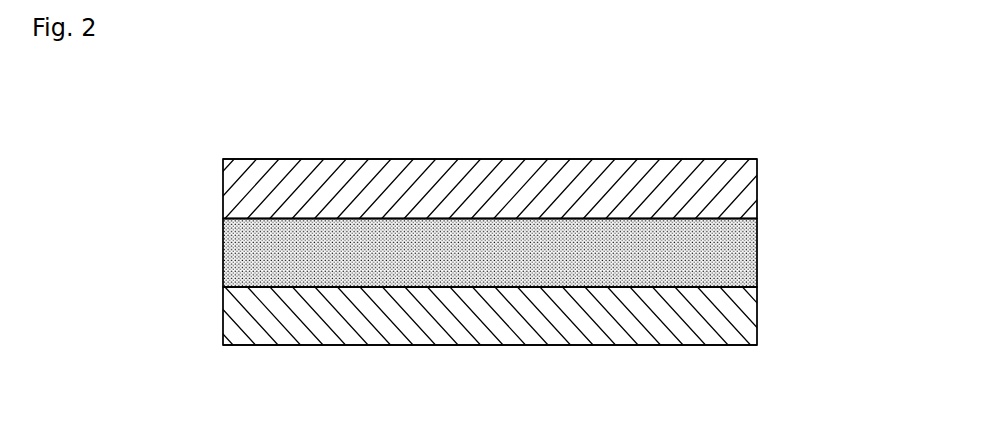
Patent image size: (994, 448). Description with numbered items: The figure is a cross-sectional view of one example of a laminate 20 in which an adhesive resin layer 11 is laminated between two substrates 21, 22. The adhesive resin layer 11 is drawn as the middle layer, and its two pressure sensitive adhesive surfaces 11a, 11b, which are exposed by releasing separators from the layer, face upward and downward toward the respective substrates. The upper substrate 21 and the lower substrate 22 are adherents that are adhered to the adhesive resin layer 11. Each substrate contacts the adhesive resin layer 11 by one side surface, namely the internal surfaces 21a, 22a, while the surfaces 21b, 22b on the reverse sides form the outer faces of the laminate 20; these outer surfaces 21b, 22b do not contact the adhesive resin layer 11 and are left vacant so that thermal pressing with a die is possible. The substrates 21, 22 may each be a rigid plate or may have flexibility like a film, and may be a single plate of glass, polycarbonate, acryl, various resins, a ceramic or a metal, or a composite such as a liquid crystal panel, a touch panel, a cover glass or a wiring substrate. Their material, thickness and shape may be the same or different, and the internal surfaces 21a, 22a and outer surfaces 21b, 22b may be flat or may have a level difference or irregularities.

The laminate 20 is at (716, 150).
The substrate 21 is at (742, 190).
The adhesive resin layer 11 is at (748, 253).
The substrate 22 is at (740, 318).
The one side surface of substrate 21a is at (250, 219).
The reverse side surface of substrate 21b is at (247, 159).
The one side surface of substrate 22a is at (236, 287).
The reverse side surface of substrate 22b is at (243, 345).
The pressure sensitive adhesive surface 11a is at (443, 218).
The pressure sensitive adhesive surface 11b is at (447, 288).